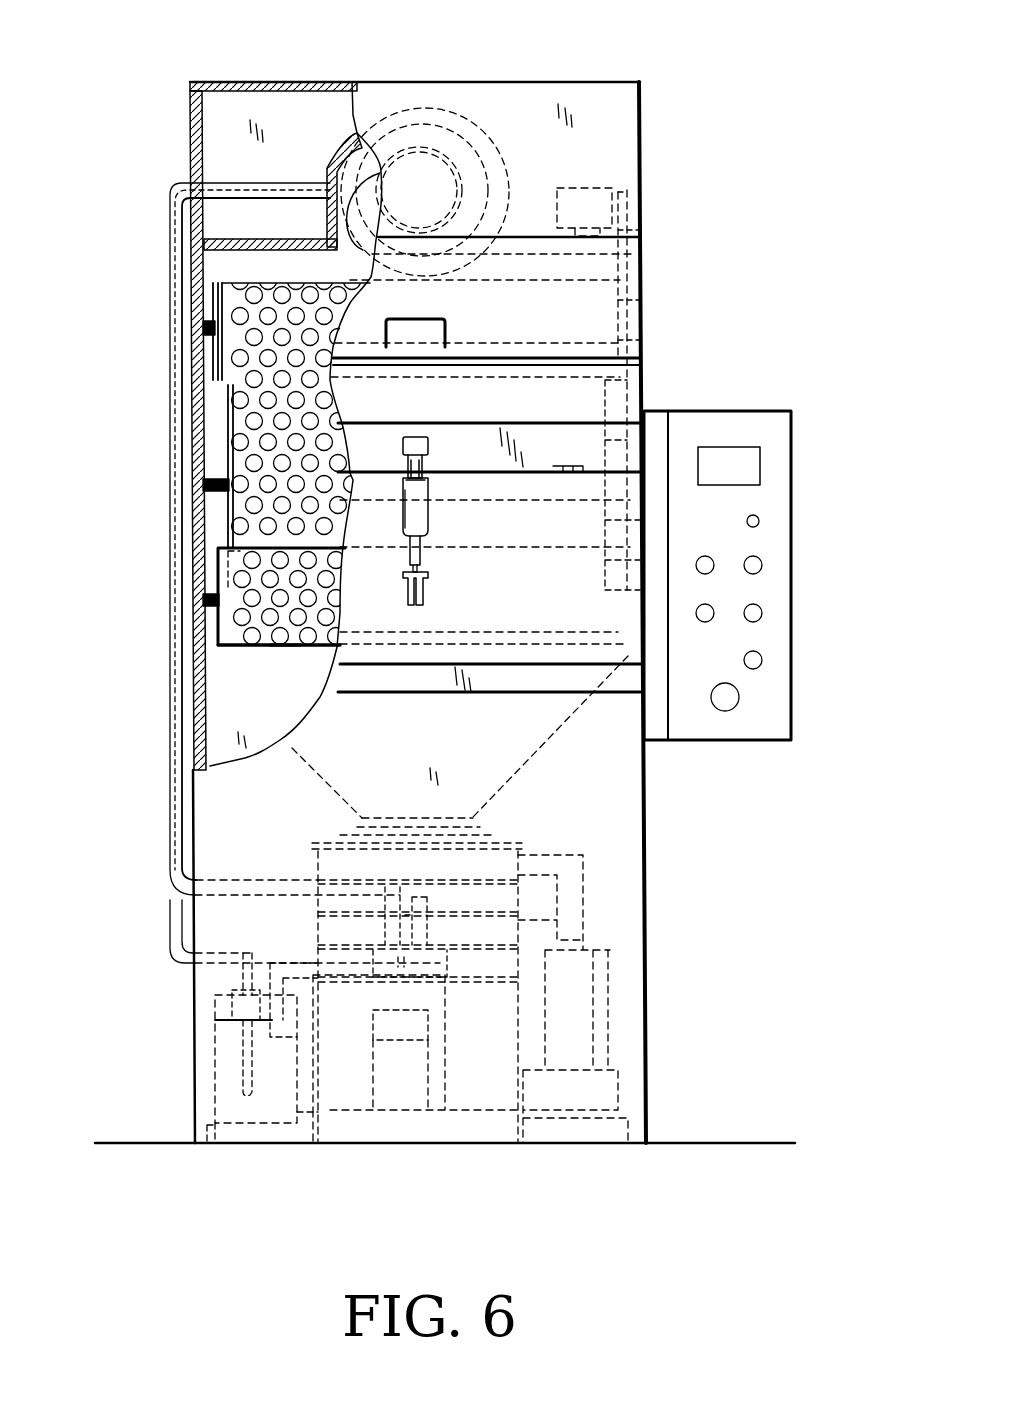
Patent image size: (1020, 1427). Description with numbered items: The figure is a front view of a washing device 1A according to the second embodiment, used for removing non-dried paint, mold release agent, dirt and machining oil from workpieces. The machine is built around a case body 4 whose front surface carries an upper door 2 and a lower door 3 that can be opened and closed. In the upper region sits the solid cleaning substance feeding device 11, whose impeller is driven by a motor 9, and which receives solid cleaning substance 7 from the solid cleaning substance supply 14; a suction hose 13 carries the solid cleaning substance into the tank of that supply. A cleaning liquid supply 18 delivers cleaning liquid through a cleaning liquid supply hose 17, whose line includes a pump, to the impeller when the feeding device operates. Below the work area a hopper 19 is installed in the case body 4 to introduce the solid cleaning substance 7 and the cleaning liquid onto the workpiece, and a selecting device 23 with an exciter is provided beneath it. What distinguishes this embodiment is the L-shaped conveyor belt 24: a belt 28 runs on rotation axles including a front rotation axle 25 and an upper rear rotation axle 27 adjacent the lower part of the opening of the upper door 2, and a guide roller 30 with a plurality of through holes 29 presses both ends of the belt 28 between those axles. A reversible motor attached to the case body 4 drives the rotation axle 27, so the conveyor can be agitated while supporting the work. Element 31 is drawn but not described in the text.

The washing device 1A is at (758, 73).
The upper door 2 is at (600, 293).
The lower door 3 is at (470, 652).
The case body 4 is at (646, 392).
The solid cleaning substance 7 is at (419, 0).
The motor 9 is at (380, 170).
The solid cleaning substance feeding device 11 is at (452, 122).
The suction hose 13 is at (172, 828).
The solid cleaning substance supply 14 is at (368, 1012).
The cleaning liquid supply hose 17 is at (175, 930).
The cleaning liquid supply 18 is at (215, 1060).
The hopper 19 is at (512, 776).
The selecting device 23 is at (320, 843).
The conveyor belt 24 is at (253, 650).
The rotation axle 25 is at (218, 630).
The rotation axle 27 is at (213, 290).
The belt 28 is at (297, 640).
The through holes 29 is at (332, 398).
The guide roller 30 is at (228, 428).
The sensor 31 is at (602, 188).